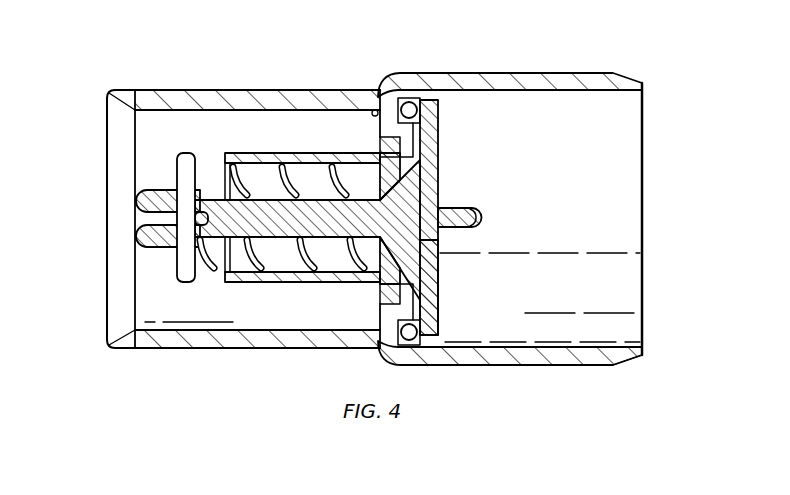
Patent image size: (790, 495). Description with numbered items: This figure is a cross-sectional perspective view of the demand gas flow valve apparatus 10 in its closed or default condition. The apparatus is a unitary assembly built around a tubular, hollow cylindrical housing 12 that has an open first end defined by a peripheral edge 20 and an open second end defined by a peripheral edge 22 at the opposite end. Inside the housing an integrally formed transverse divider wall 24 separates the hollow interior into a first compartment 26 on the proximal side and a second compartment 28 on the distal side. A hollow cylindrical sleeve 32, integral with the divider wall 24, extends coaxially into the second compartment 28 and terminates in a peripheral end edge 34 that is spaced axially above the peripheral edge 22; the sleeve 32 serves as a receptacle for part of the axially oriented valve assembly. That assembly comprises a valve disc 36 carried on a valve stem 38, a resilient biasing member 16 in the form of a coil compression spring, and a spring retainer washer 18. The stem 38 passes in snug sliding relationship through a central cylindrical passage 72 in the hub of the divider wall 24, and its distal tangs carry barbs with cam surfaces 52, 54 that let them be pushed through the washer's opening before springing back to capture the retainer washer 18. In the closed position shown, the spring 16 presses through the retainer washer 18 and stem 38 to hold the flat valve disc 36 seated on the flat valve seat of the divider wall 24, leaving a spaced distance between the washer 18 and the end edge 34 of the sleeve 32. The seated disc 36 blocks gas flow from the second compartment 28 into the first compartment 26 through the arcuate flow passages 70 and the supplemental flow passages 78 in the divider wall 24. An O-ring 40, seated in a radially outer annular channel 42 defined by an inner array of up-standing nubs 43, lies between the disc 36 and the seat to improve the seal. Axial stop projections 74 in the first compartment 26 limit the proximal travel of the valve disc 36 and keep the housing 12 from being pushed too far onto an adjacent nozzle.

The demand gas flow valve apparatus 10 is at (369, 204).
The housing 12 is at (537, 219).
The resilient biasing member 16 is at (207, 262).
The spring retainer washer 18 is at (238, 230).
The peripheral edge 20 is at (645, 352).
The peripheral edge 22 is at (106, 338).
The transverse divider wall 24 is at (402, 84).
The first compartment 26 is at (512, 323).
The second compartment 28 is at (152, 302).
The sleeve 32 is at (272, 226).
The peripheral end edge 34 is at (222, 156).
The valve disc 36 is at (440, 294).
The valve stem 38 is at (289, 232).
The O-ring 40 is at (418, 112).
The annular channel 42 is at (382, 93).
The nubs 43 is at (438, 135).
The cam surface 52 is at (140, 245).
The cam surface 54 is at (140, 200).
The flow passages 70 is at (380, 137).
The cylindrical passage 72 is at (478, 213).
The axial stop projections 74 is at (468, 206).
The supplemental flow passages 78 is at (383, 177).